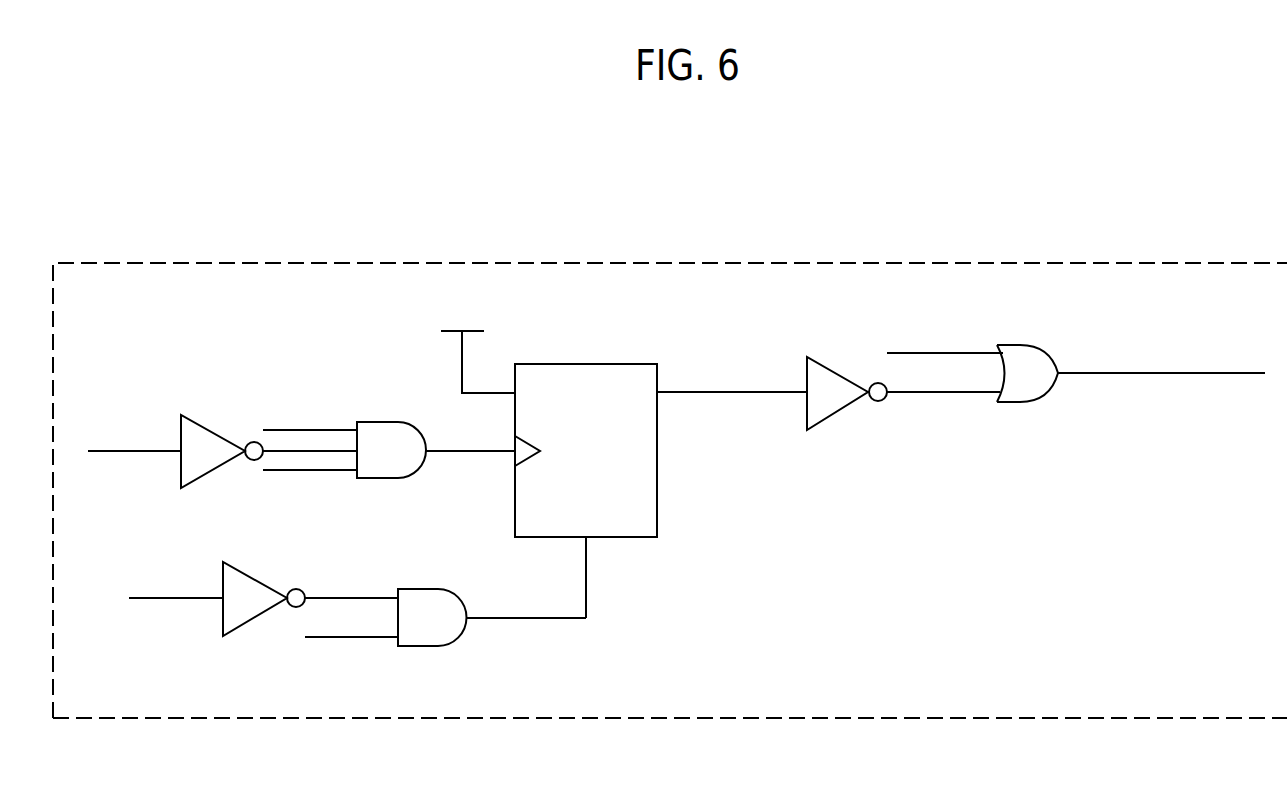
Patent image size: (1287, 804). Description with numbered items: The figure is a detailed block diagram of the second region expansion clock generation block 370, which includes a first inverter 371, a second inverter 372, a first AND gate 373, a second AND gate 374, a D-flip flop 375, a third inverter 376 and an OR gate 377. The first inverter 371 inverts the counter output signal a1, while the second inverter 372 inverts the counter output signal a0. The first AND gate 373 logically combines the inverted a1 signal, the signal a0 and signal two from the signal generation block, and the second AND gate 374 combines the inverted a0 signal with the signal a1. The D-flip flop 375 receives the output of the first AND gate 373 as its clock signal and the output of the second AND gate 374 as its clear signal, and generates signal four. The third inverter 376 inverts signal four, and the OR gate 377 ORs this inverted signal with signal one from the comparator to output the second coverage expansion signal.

The second region expansion clock generation block 370 is at (1120, 263).
The first inverter 371 is at (200, 414).
The second inverter 372 is at (237, 562).
The first AND gate 373 is at (376, 421).
The second AND gate 374 is at (412, 589).
The D-flip flop 375 is at (590, 364).
The third inverter 376 is at (822, 430).
The OR gate 377 is at (1007, 402).